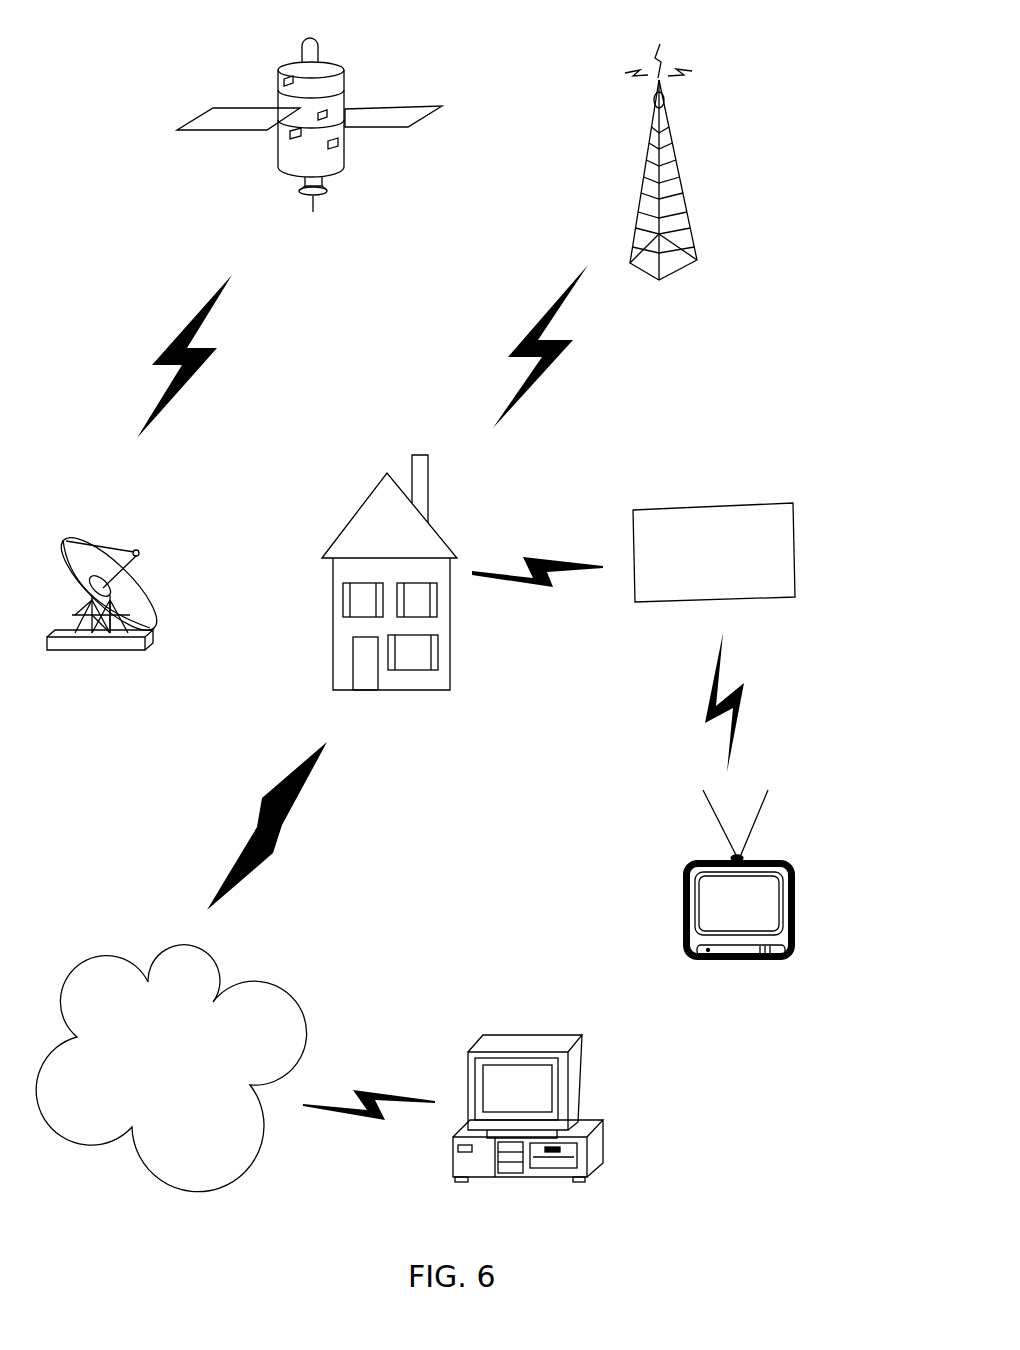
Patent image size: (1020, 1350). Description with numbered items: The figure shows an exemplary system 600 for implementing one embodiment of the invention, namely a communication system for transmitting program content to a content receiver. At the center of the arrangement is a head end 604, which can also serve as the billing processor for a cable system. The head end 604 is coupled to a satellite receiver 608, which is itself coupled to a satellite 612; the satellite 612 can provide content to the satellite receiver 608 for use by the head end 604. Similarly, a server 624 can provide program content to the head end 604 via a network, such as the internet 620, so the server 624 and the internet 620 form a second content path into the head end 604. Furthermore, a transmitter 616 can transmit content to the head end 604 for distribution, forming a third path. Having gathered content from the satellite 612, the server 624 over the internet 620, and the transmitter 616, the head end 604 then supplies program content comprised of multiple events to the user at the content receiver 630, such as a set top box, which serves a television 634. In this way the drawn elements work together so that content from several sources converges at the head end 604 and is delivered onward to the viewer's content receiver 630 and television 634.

The system 600 is at (114, 27).
The head end 604 is at (420, 502).
The satellite receiver 608 is at (137, 578).
The satellite 612 is at (410, 110).
The transmitter 616 is at (683, 232).
The internet 620 is at (292, 1017).
The server 624 is at (580, 1062).
The content receiver 630 is at (787, 520).
The television 634 is at (797, 903).